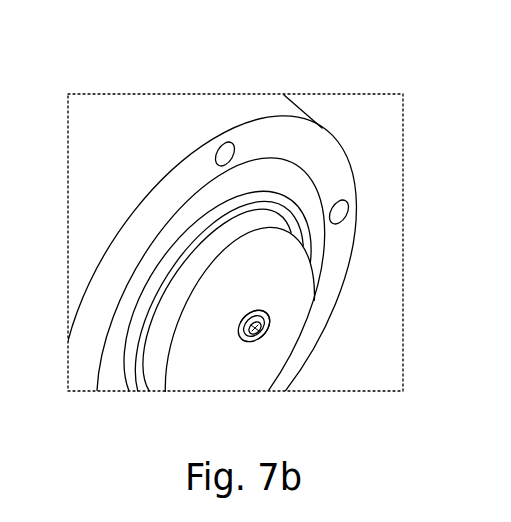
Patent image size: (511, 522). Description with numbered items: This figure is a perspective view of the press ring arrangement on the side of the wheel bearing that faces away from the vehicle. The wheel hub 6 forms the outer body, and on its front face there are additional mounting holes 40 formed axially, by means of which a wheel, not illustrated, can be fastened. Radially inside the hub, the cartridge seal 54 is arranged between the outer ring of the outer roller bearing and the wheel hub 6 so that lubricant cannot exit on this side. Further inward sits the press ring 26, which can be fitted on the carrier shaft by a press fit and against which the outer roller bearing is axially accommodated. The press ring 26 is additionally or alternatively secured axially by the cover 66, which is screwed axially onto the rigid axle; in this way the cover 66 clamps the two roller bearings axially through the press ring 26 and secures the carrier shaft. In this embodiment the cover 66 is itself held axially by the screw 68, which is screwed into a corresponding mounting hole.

The wheel hub 6 is at (125, 143).
The press ring 26 is at (283, 206).
The mounting holes 40 is at (227, 140).
The cartridge seal 54 is at (272, 167).
The cover 66 is at (295, 273).
The screw 68 is at (267, 335).